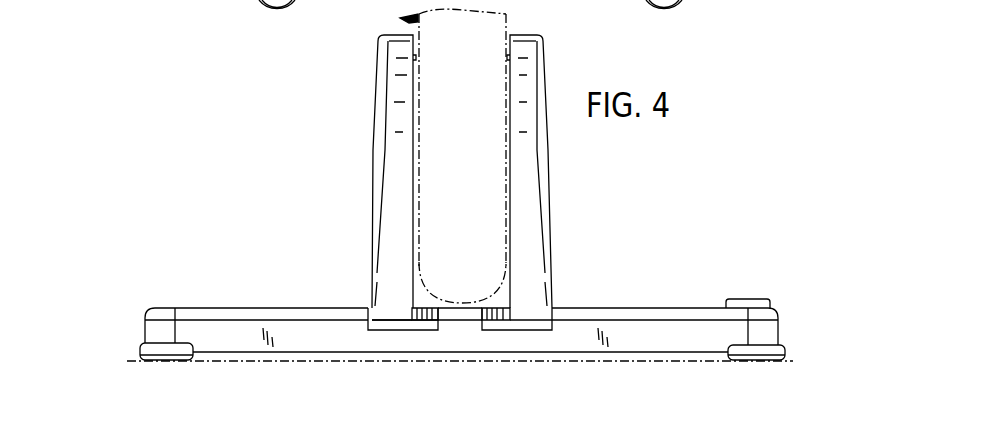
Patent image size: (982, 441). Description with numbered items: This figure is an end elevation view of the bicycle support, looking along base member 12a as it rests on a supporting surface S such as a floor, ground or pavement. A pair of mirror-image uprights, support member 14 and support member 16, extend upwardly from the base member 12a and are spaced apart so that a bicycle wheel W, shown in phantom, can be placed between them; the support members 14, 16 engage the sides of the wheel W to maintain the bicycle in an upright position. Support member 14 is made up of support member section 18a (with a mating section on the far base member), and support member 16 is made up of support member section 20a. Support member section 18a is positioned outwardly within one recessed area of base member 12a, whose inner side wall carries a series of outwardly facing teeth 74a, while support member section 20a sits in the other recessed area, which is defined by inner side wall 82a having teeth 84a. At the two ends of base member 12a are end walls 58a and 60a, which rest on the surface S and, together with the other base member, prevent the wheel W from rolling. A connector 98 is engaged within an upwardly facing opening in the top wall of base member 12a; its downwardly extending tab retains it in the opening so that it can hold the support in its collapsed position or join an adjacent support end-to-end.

The base member 12a is at (673, 298).
The support member 14 is at (554, 167).
The support member 16 is at (364, 161).
The support member section 18a is at (551, 203).
The support member section 20a is at (373, 200).
The end wall 58a is at (778, 327).
The end wall 60a is at (145, 327).
The outwardly facing teeth 74a is at (490, 303).
The inner side wall 82a is at (421, 323).
The teeth 84a is at (429, 305).
The connector 98 is at (752, 300).
The bicycle wheel W is at (396, 18).
The supporting surface S is at (793, 360).